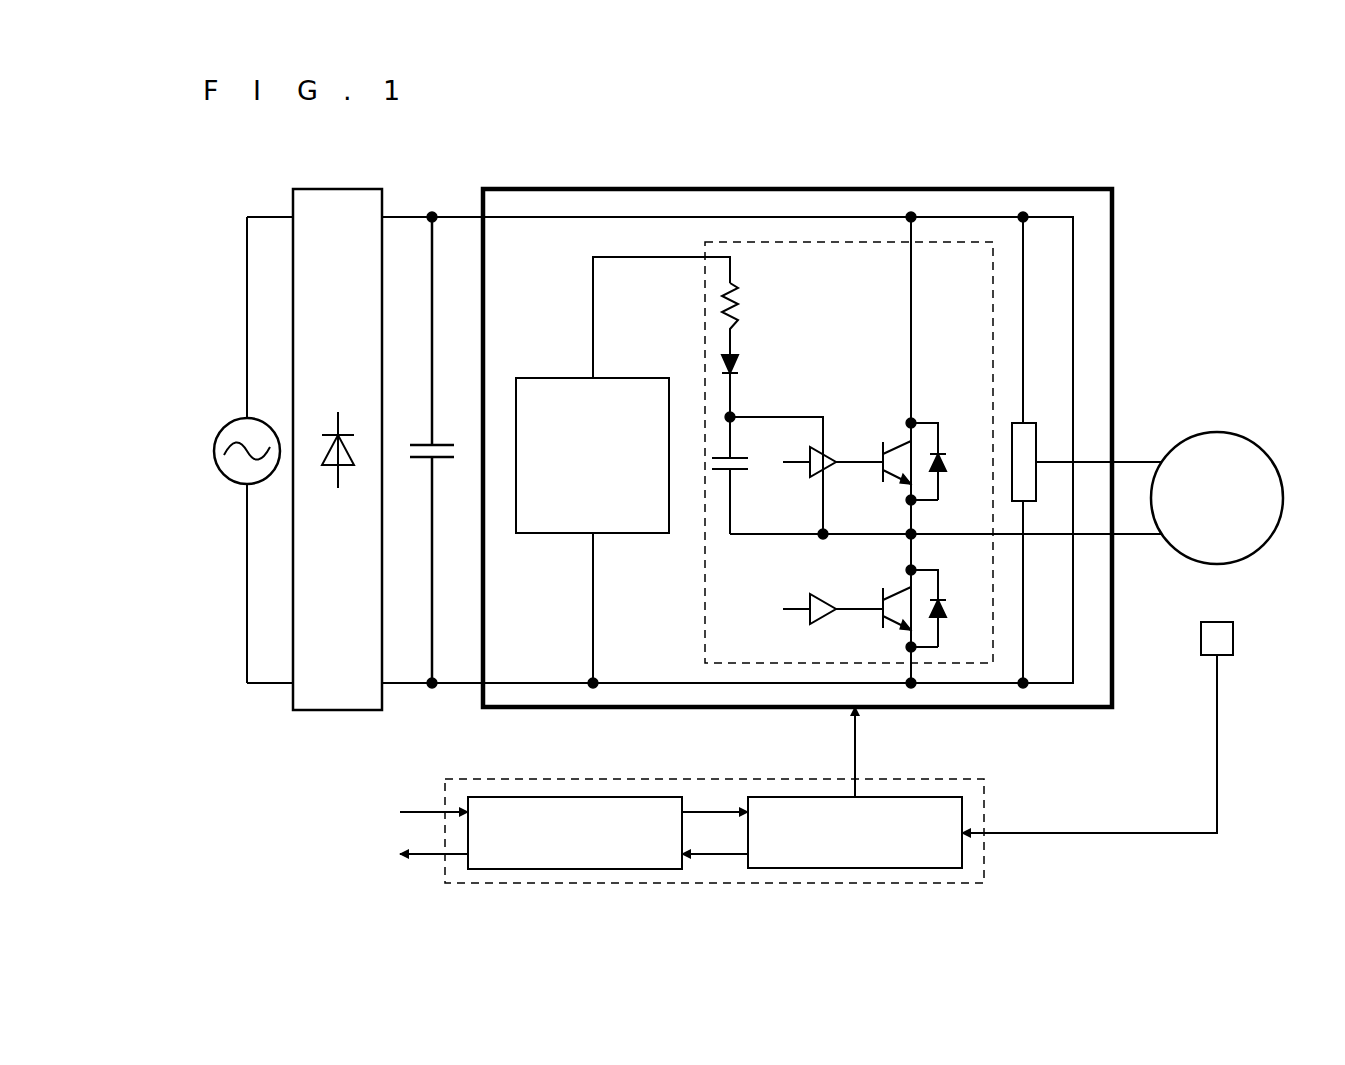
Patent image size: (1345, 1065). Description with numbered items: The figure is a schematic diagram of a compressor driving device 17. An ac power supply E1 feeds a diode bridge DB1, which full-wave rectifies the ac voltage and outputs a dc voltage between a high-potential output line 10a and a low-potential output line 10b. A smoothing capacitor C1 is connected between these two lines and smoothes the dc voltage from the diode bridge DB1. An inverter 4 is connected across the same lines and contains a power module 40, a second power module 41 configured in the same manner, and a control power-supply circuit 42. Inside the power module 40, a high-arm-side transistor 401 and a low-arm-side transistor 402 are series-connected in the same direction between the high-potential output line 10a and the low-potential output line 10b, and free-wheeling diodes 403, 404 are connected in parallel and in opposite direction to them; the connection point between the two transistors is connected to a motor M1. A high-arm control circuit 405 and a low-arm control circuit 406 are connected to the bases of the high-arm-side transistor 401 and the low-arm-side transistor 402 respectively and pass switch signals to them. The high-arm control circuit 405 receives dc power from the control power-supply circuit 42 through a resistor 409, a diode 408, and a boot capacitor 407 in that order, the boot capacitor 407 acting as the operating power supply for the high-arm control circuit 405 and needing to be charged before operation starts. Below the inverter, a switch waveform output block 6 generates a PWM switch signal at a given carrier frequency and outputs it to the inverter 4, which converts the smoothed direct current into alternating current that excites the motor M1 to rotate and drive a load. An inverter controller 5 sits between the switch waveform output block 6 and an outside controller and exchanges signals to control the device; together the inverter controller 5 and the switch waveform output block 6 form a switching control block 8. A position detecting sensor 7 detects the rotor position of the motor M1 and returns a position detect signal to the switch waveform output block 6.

The ac power supply E1 is at (214, 451).
The diode bridge DB1 is at (339, 189).
The high-potential output line 10a is at (411, 217).
The low-potential output line 10b is at (410, 685).
The smoothing capacitor C1 is at (424, 441).
The compressor driving device 17 is at (1115, 131).
The inverter 4 is at (837, 189).
The control power-supply circuit 42 is at (520, 378).
The power module 40 is at (812, 243).
The resistor 409 is at (740, 306).
The diode 408 is at (740, 364).
The boot capacitor 407 is at (750, 472).
The high-arm control circuit 405 is at (830, 470).
The low-arm control circuit 406 is at (832, 623).
The high-arm-side transistor 401 is at (880, 450).
The low-arm-side transistor 402 is at (880, 600).
The free-wheeling diode 403 is at (944, 461).
The free-wheeling diode 404 is at (944, 609).
The power module 41 is at (1042, 422).
The motor M1 is at (1283, 498).
The position detecting sensor 7 is at (1233, 637).
The switching control block 8 is at (984, 858).
The inverter controller 5 is at (576, 869).
The switch waveform output block 6 is at (856, 868).